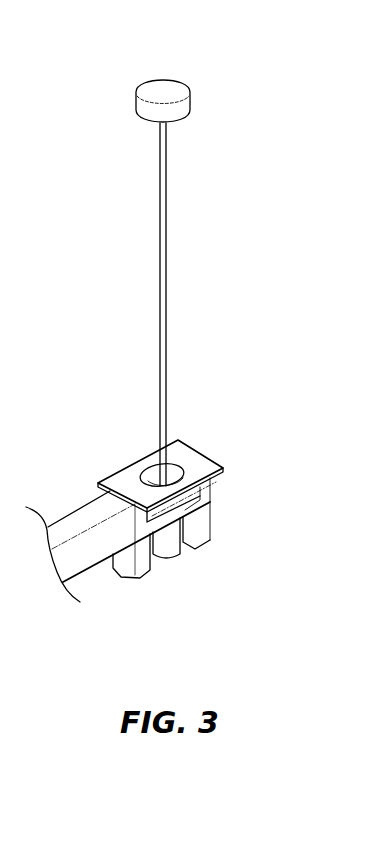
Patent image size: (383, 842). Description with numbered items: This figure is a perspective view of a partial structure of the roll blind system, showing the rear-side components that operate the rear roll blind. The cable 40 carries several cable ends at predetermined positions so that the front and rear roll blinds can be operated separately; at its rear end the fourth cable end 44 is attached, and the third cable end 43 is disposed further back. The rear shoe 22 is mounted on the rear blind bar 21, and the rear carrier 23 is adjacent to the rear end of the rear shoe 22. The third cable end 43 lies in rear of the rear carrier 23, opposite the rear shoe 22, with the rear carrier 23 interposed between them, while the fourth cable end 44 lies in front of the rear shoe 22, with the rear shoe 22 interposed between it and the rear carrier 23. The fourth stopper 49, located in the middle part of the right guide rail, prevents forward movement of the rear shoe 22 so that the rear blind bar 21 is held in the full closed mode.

The rear blind bar 21 is at (83, 557).
The rear shoe 22 is at (210, 488).
The rear carrier 23 is at (203, 530).
The cable 40 is at (163, 262).
The third cable end 43 is at (172, 552).
The fourth cable end 44 is at (178, 95).
The fourth stopper 49 is at (187, 443).